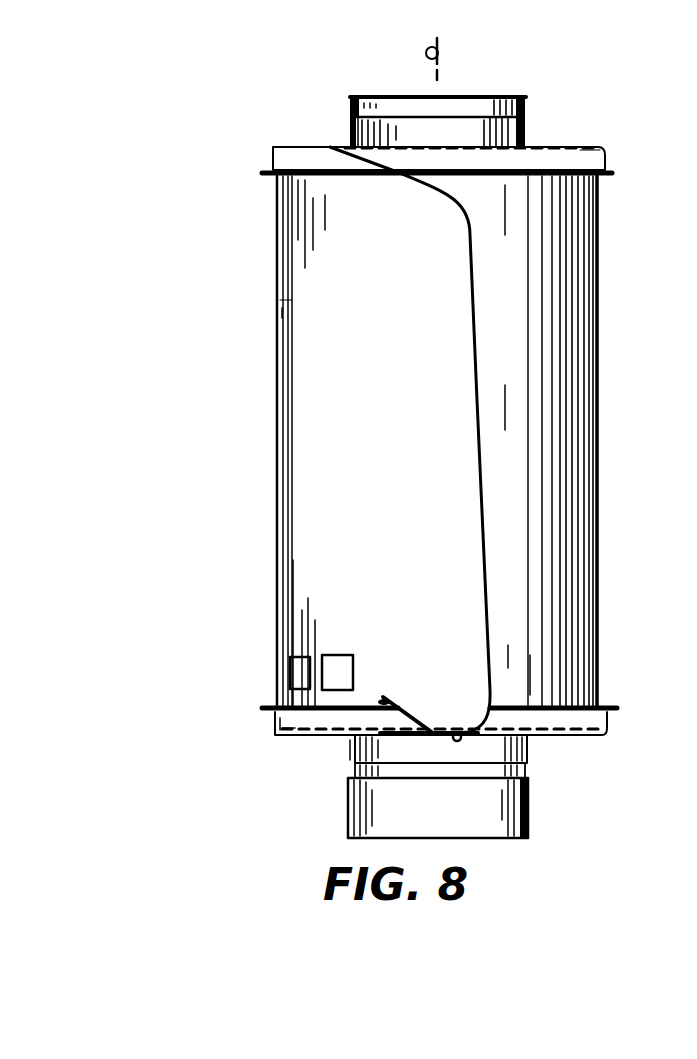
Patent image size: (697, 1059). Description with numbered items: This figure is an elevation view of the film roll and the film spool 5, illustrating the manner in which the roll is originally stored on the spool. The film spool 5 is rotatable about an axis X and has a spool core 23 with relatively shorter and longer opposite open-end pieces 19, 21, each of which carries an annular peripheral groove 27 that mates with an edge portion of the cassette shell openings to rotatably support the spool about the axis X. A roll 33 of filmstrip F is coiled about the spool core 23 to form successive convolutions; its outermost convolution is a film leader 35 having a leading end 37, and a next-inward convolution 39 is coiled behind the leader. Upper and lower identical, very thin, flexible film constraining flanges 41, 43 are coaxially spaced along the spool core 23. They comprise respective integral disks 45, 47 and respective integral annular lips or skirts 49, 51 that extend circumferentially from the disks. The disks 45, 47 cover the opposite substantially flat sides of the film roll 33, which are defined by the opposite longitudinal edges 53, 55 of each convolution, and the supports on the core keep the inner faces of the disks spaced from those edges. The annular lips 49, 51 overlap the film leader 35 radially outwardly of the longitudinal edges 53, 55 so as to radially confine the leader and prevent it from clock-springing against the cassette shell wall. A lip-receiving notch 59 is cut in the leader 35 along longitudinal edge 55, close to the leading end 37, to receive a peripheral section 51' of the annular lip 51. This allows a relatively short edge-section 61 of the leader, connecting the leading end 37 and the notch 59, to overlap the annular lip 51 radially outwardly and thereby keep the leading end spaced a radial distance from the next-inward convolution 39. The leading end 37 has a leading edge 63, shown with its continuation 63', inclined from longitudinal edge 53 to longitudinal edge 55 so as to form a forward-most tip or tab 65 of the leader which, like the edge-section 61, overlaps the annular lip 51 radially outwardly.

The film spool 5 is at (258, 500).
The shorter open-end piece 19 is at (528, 97).
The longer open-end piece 21 is at (355, 812).
The spool core 23 is at (343, 92).
The annular peripheral groove 27 is at (358, 108).
The film roll 33 is at (268, 447).
The film leader 35 is at (278, 392).
The leading end 37 is at (437, 472).
The next-inward convolution 39 is at (532, 404).
The upper film constraining flange 41 is at (262, 152).
The lower film constraining flange 43 is at (258, 732).
The disk 45 is at (585, 145).
The disk 47 is at (288, 740).
The annular lip 49 is at (270, 158).
The annular lip 51 is at (204, 733).
The peripheral section of annular lip 51' is at (327, 774).
The longitudinal edge 53 is at (300, 147).
The longitudinal edge 55 is at (300, 748).
The lip-receiving notch 59 is at (390, 700).
The edge-section 61 is at (458, 733).
The leading edge 63 is at (410, 440).
The liner wall lower portion 63' is at (449, 625).
The tab 65 is at (470, 718).
The filmstrip F is at (297, 312).
The axis X is at (448, 55).